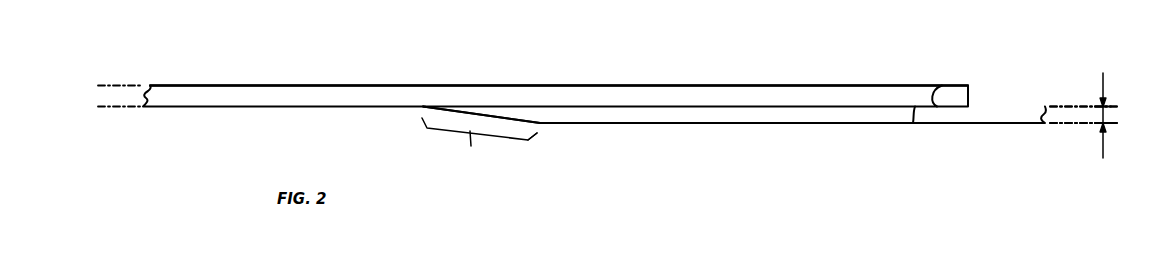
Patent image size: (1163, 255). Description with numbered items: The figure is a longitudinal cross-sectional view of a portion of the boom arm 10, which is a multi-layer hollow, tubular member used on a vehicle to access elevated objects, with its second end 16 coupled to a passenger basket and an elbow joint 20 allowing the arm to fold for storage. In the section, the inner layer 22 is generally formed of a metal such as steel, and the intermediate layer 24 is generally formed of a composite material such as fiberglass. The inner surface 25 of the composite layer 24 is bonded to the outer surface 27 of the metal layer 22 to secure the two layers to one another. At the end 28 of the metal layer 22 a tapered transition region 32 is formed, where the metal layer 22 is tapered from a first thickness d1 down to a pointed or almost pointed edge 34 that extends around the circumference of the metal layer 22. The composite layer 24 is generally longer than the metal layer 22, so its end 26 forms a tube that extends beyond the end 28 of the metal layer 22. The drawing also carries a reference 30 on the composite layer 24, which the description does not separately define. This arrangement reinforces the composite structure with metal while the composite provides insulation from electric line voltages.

The boom arm 10 is at (854, 42).
The second end 16 is at (123, 115).
The elbow joint 20 is at (1060, 136).
The inner layer 22 is at (737, 123).
The intermediate layer 24 is at (422, 85).
The inner surface 25 is at (941, 85).
The end 26 is at (222, 85).
The outer surface 27 is at (913, 124).
The end 28 is at (536, 140).
The second surface 30 is at (583, 85).
The transition region 32 is at (479, 143).
The pointed edge 34 is at (422, 107).
The first thickness d1 is at (1107, 104).